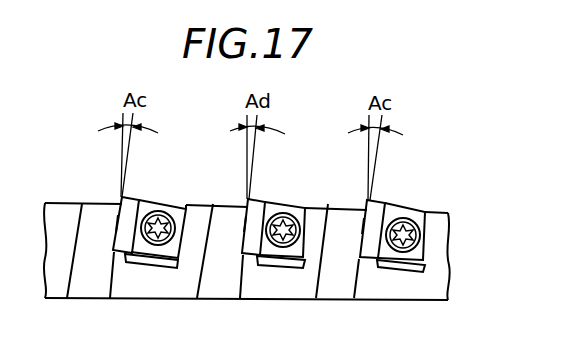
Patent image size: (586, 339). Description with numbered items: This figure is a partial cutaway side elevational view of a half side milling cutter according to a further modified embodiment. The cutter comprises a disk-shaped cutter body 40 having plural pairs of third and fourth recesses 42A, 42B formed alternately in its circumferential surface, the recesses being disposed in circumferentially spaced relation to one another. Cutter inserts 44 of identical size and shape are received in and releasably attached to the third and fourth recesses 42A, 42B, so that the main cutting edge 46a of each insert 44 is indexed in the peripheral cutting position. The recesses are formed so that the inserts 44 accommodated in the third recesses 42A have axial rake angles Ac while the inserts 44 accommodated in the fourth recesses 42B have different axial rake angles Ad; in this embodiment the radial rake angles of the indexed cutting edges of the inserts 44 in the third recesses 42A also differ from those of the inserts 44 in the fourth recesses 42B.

The cutter body 40 is at (437, 209).
The third recess 42A is at (117, 233).
The fourth recess 42B is at (263, 201).
The cutter insert 44 is at (138, 198).
The main cutting edge 46a is at (118, 223).